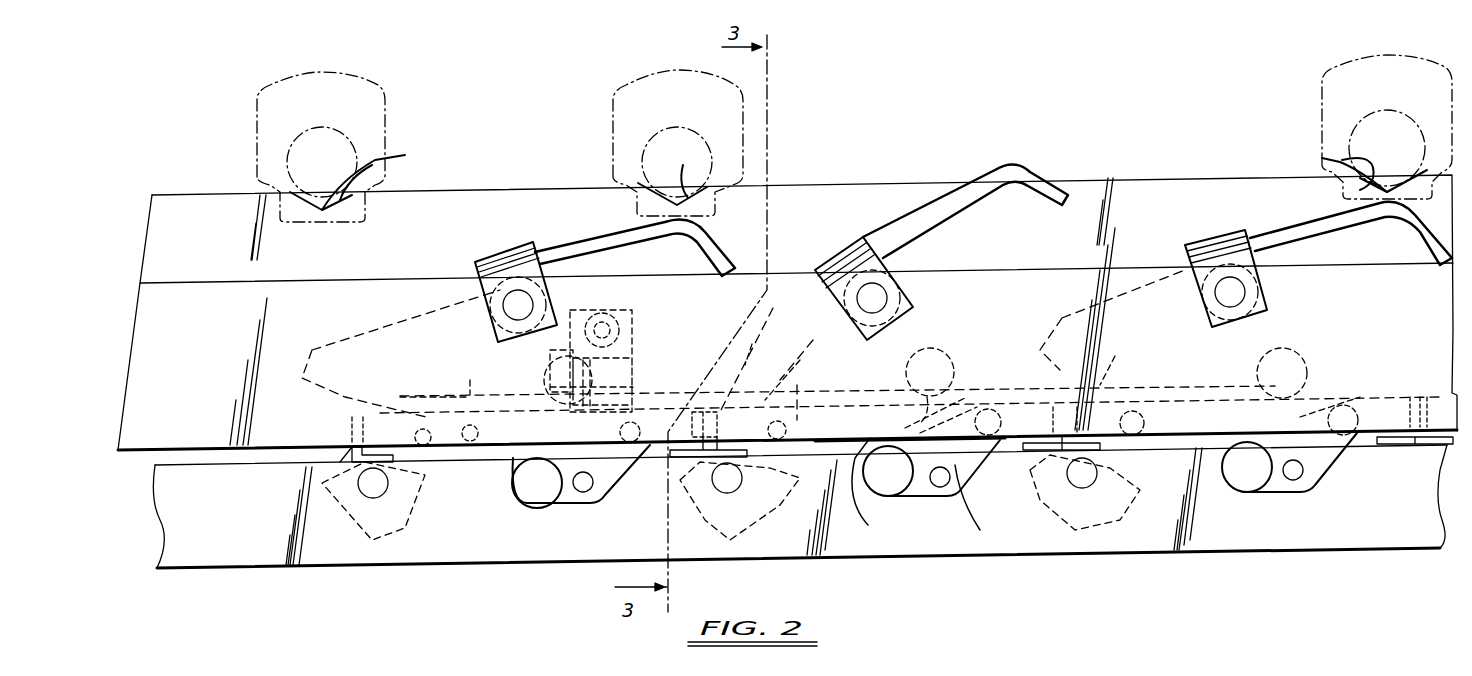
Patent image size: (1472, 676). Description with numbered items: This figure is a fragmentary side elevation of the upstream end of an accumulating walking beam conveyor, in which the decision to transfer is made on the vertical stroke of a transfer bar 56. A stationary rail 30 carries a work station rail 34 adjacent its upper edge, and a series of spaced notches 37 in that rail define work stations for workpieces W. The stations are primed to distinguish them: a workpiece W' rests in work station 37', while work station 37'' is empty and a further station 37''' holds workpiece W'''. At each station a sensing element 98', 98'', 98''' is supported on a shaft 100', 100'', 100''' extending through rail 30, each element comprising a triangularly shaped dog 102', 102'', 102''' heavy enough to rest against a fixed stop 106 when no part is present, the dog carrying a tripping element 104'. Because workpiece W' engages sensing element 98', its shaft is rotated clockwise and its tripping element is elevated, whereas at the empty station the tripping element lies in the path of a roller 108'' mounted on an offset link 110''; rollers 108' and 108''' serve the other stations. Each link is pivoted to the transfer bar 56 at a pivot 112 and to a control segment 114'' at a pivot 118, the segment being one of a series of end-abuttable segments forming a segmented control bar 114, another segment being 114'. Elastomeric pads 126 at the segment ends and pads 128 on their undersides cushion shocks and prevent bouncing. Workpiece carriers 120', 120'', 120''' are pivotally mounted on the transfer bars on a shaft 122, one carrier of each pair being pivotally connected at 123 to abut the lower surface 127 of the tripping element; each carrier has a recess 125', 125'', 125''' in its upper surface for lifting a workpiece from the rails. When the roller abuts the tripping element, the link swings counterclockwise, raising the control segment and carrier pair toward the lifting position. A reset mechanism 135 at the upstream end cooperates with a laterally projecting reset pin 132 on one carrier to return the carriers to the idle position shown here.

The stationary rail 30 is at (150, 340).
The work station rail 34 is at (204, 196).
The transfer bar 56 is at (1375, 545).
The workpiece W is at (324, 134).
The workpiece W' is at (678, 125).
The workpiece W''' is at (1371, 119).
The notch 37 is at (364, 180).
The work station 37' is at (674, 169).
The work station 37'' is at (1073, 167).
The work station 37''' is at (1313, 167).
The sensing element 98' is at (635, 242).
The sensing element 98'' is at (965, 211).
The sensing element 98''' is at (1351, 231).
The shaft 100' is at (493, 292).
The shaft 100'' is at (864, 334).
The shaft 100''' is at (1219, 311).
The dog 102' is at (401, 354).
The dog 102'' is at (773, 361).
The dog 102''' is at (1105, 320).
The tripping element 104' is at (438, 375).
The fixed stop 106 is at (1310, 345).
The roller 108' is at (581, 497).
The roller 108'' is at (931, 527).
The roller 108''' is at (1286, 483).
The link 110'' is at (982, 509).
The pivot 112 is at (1292, 480).
The segmented control bar 114 is at (1416, 482).
The control segment 114' is at (671, 380).
The control segment 114'' is at (1008, 488).
The pivot 118 is at (1380, 420).
The workpiece carrier 120' is at (403, 501).
The workpiece carrier 120'' is at (740, 508).
The workpiece carrier 120''' is at (1079, 502).
The shaft 122 is at (1085, 480).
The pivotal connection 123 is at (450, 487).
The recess 125' is at (620, 513).
The recess 125'' is at (956, 389).
The recess 125''' is at (1345, 393).
The elastomeric pad 126 is at (946, 350).
The lower surface 127 is at (870, 490).
The elastomeric pad 128 is at (618, 465).
The reset pin 132 is at (488, 438).
The reset mechanism 135 is at (643, 325).